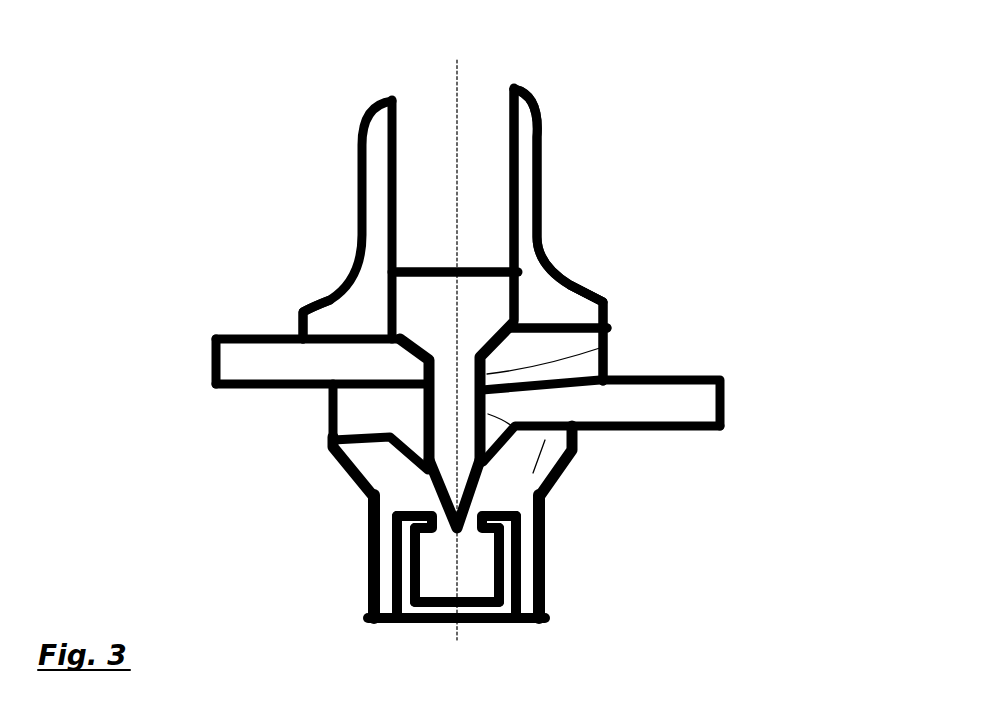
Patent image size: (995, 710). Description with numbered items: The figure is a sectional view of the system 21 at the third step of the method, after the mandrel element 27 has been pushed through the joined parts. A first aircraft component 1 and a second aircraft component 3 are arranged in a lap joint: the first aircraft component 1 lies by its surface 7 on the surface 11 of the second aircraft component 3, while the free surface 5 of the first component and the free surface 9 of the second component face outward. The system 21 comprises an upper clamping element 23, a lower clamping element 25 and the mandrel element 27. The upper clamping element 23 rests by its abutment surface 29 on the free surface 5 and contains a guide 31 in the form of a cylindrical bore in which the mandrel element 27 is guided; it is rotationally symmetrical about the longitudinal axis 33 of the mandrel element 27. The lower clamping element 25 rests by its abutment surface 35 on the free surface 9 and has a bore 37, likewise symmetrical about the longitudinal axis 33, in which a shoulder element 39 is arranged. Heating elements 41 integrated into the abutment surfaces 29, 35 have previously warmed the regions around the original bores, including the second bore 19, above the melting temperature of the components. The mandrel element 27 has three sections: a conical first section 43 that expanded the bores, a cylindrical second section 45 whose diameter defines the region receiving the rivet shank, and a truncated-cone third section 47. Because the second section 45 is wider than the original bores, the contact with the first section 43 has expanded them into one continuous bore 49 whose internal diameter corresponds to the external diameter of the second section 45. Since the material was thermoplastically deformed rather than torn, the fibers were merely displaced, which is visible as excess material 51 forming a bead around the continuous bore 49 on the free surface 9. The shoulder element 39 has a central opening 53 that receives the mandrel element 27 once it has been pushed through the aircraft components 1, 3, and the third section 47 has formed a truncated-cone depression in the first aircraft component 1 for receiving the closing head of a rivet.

The first aircraft component 1 is at (253, 381).
The second aircraft component 3 is at (709, 415).
The free surface 5 is at (210, 338).
The surface 7 is at (220, 390).
The free surface 9 is at (683, 430).
The surface 11 is at (700, 377).
The second bore 19 is at (607, 343).
The system 21 is at (775, 130).
The upper clamping element 23 is at (530, 255).
The lower clamping element 25 is at (532, 587).
The mandrel element 27 is at (436, 290).
The abutment surface 29 is at (313, 308).
The guide 31 is at (481, 112).
The longitudinal axis 33 is at (457, 72).
The abutment surface 35 is at (350, 450).
The bore 37 is at (486, 468).
The shoulder element 39 is at (415, 622).
The heating elements 41 is at (555, 320).
The first section 43 is at (392, 560).
The second section 45 is at (430, 390).
The third section 47 is at (496, 333).
The continuous bore 49 is at (484, 467).
The excess material 51 is at (390, 517).
The central opening 53 is at (503, 625).